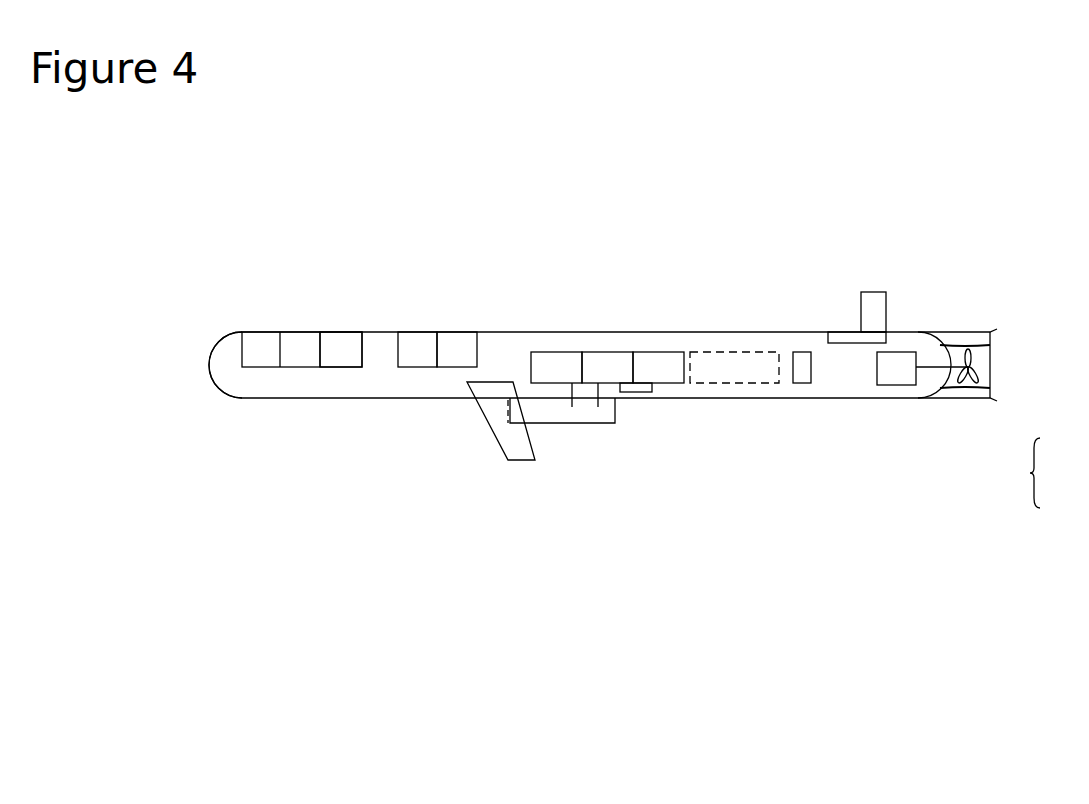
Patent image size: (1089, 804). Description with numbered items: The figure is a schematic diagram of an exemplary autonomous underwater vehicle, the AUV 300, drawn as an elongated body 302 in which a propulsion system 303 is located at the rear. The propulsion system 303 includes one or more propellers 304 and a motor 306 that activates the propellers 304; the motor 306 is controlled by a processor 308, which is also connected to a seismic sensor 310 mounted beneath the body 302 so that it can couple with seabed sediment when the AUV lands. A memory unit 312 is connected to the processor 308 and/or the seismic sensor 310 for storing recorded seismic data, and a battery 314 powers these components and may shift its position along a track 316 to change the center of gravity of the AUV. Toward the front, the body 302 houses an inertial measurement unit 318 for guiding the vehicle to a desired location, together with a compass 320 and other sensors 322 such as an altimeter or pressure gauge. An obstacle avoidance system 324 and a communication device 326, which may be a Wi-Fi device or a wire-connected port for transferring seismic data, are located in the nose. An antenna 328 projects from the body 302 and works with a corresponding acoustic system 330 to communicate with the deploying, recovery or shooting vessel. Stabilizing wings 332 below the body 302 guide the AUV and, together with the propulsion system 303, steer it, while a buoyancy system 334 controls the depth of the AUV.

The AUV 300 is at (655, 193).
The body 302 is at (380, 368).
The propulsion system 303 is at (1031, 475).
The propeller 304 is at (973, 357).
The motor 306 is at (893, 377).
The processor 308 is at (610, 365).
The seismic sensor 310 is at (560, 423).
The memory unit 312 is at (557, 363).
The battery 314 is at (658, 362).
The track 316 is at (742, 363).
The inertial measurement unit 318 is at (463, 358).
The compass 320 is at (413, 357).
The other sensors 322 is at (342, 360).
The obstacle avoidance system 324 is at (300, 345).
The communication device 326 is at (260, 340).
The antenna 328 is at (883, 303).
The acoustic system 330 is at (850, 342).
The wings 332 is at (505, 455).
The buoyancy system 334 is at (802, 372).